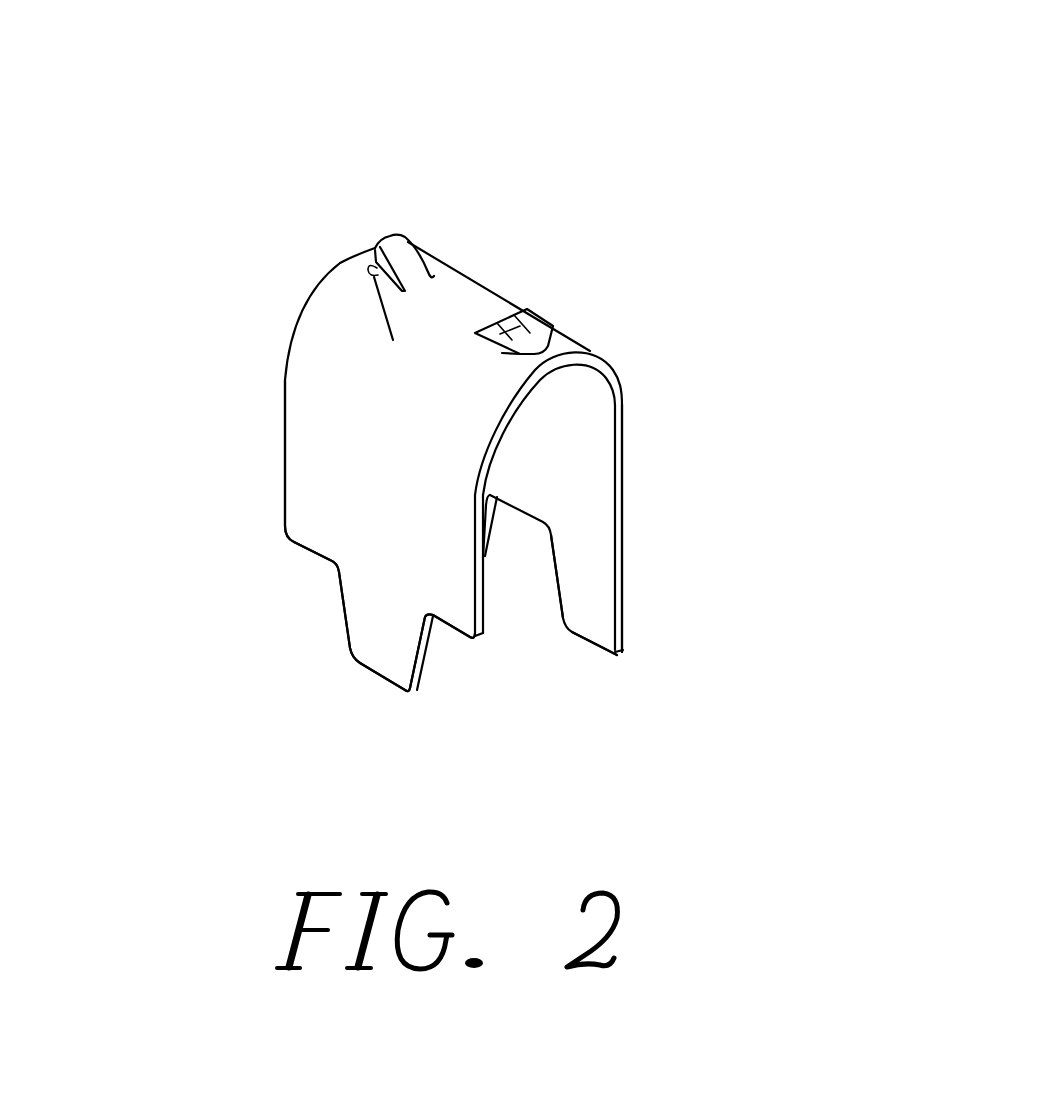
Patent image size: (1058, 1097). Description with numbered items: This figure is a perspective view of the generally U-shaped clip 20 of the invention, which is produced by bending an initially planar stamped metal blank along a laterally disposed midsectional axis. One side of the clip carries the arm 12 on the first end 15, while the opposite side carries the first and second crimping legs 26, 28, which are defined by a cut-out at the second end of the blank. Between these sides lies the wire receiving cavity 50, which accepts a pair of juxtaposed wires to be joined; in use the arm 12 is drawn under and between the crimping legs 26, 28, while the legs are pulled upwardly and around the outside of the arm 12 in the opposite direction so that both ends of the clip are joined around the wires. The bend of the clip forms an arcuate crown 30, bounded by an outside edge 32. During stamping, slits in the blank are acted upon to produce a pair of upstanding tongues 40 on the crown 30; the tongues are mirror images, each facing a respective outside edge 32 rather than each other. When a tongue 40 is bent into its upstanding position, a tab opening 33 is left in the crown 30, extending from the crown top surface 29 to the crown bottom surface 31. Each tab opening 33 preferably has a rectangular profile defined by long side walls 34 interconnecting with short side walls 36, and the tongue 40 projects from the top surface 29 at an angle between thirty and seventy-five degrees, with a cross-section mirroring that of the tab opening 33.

The arm 12 is at (383, 625).
The first end 15 is at (305, 602).
The U-shaped clip 20 is at (416, 488).
The first crimping leg 26 is at (493, 497).
The second crimping leg 28 is at (592, 600).
The crown top surface 29 is at (453, 297).
The arcuate crown 30 is at (577, 332).
The crown bottom surface 31 is at (527, 390).
The outside edge 32 is at (622, 415).
The tab opening 33 is at (517, 343).
The long side walls 34 is at (502, 353).
The short side walls 36 is at (393, 340).
The upstanding tongue 40 is at (393, 232).
The wire receiving cavity 50 is at (575, 490).